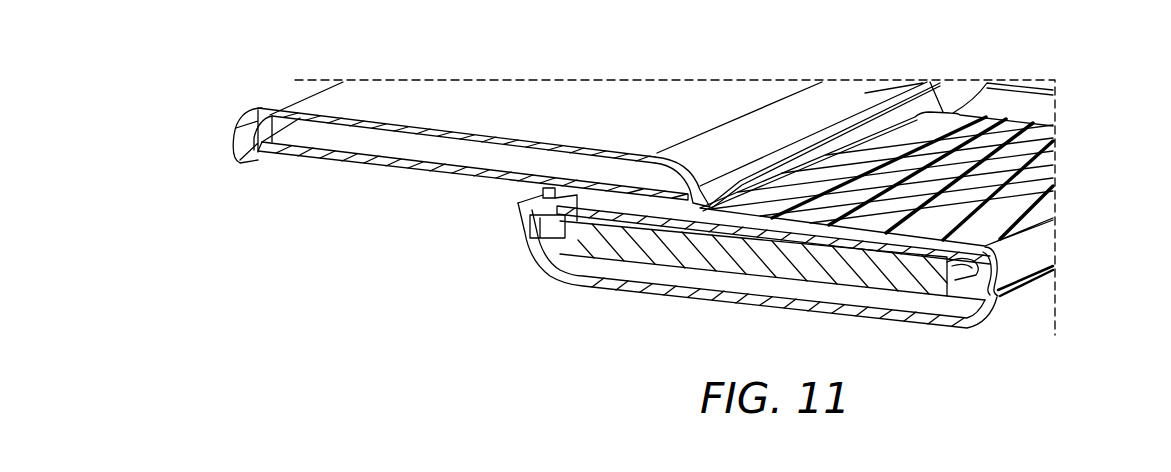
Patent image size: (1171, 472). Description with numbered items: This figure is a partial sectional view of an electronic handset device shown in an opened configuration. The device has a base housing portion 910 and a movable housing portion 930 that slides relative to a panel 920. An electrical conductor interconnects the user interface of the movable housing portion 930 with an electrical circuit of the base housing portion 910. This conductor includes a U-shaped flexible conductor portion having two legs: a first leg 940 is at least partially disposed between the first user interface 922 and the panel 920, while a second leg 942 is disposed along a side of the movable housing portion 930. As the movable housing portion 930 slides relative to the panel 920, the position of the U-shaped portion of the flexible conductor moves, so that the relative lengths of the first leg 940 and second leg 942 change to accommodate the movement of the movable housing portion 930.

The base housing portion 910 is at (672, 292).
The panel 920 is at (789, 236).
The first user interface 922 is at (962, 148).
The movable housing portion 930 is at (320, 104).
The first leg 940 is at (728, 223).
The second leg 942 is at (608, 183).